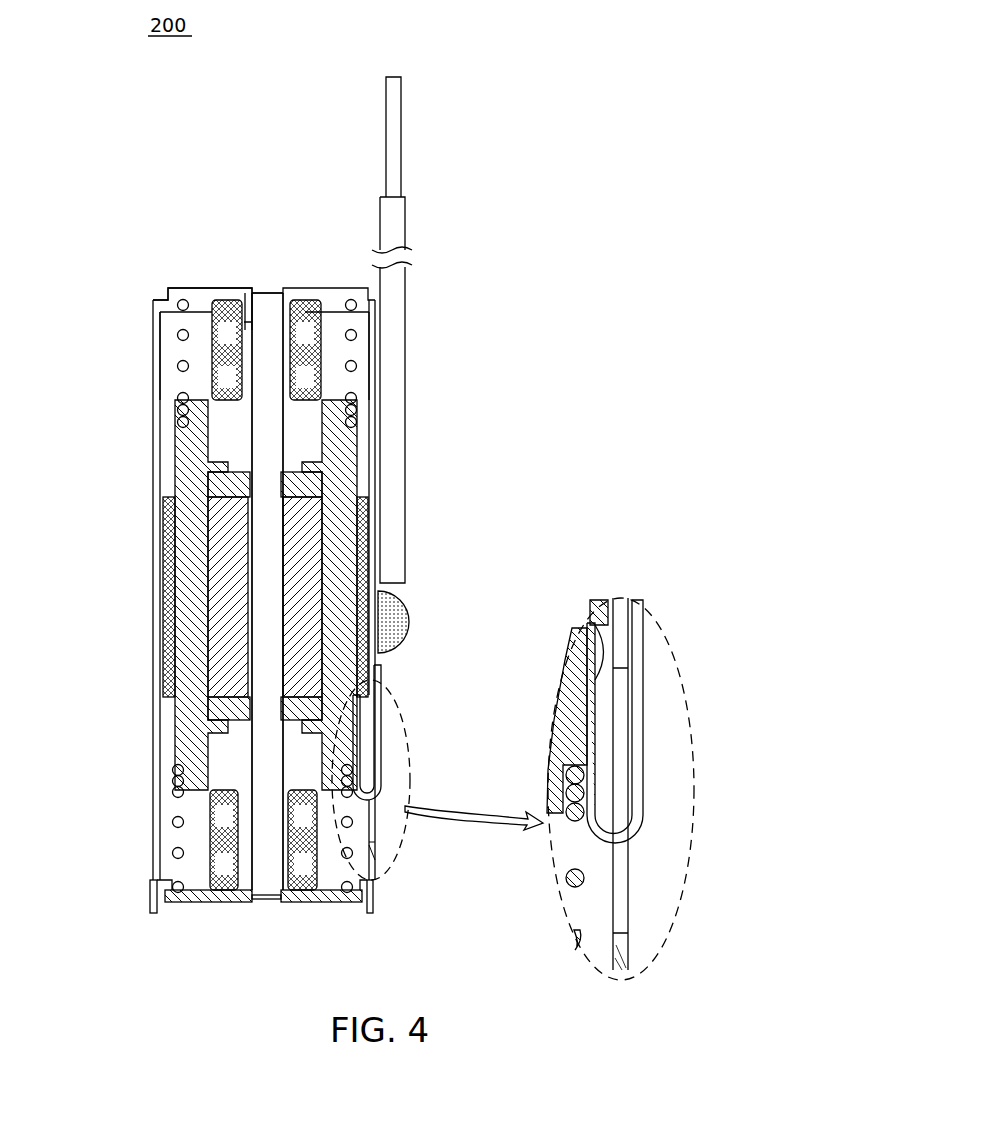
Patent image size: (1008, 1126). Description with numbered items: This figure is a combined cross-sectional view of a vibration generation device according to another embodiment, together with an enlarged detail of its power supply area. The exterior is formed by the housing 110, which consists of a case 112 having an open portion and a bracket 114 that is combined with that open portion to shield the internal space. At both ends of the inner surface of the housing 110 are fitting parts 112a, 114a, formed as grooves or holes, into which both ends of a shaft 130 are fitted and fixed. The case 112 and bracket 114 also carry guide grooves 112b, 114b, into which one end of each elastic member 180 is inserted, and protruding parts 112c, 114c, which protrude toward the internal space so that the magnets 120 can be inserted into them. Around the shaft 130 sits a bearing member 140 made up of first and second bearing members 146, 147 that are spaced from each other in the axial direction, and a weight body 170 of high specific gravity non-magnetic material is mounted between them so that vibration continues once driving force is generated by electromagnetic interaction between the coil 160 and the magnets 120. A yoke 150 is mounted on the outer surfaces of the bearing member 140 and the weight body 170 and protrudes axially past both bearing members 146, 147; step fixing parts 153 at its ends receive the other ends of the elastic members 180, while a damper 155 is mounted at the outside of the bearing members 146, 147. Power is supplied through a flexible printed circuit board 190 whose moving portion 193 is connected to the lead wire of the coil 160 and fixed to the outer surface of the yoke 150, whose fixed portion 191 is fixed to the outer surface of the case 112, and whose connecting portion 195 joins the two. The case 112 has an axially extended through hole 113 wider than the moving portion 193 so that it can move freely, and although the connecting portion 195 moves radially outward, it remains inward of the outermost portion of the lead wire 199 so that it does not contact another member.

The housing 110 is at (484, 880).
The case 112 is at (373, 873).
The fitting part 112a is at (270, 295).
The guide groove 112b is at (203, 290).
The protruding part 112c is at (242, 290).
The through hole 113 is at (372, 842).
The bracket 114 is at (278, 929).
The fitting part 114a is at (275, 905).
The guide groove 114b is at (190, 905).
The protruding part 114c is at (262, 903).
The magnet 120 is at (323, 388).
The shaft 130 is at (268, 382).
The bearing member 140 is at (260, 596).
The first bearing member 146 is at (208, 487).
The second bearing member 147 is at (192, 690).
The yoke 150 is at (333, 607).
The step fixing part 153 is at (187, 347).
The damper 155 is at (198, 462).
The coil 160 is at (395, 598).
The weight body 170 is at (300, 555).
The elastic member 180 is at (177, 306).
The flexible printed circuit board 190 is at (587, 721).
The fixed portion 191 is at (383, 668).
The moving portion 193 is at (372, 698).
The connecting portion 195 is at (380, 748).
The lead wire 199 is at (400, 287).